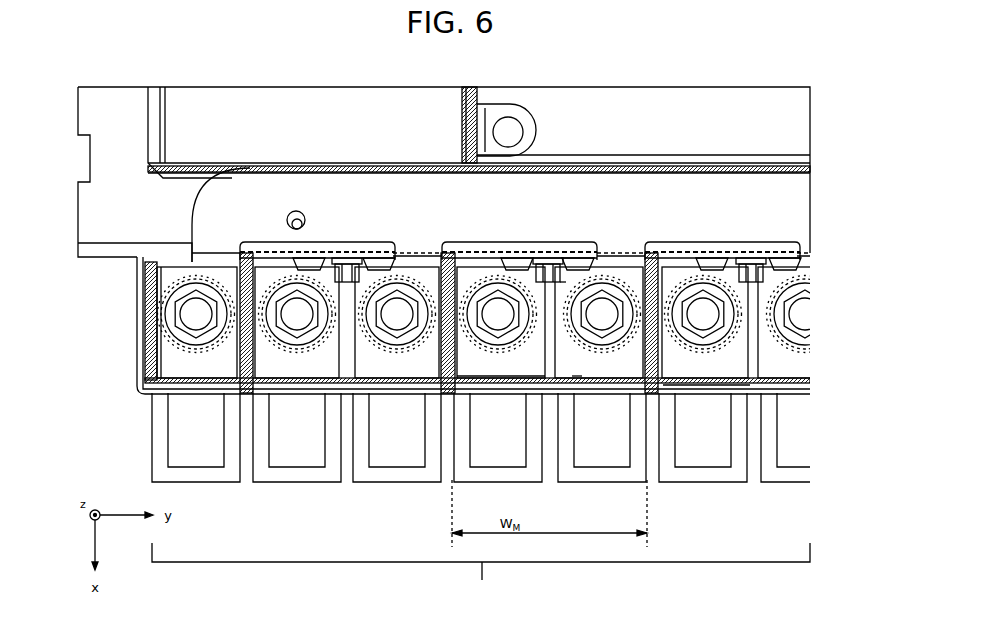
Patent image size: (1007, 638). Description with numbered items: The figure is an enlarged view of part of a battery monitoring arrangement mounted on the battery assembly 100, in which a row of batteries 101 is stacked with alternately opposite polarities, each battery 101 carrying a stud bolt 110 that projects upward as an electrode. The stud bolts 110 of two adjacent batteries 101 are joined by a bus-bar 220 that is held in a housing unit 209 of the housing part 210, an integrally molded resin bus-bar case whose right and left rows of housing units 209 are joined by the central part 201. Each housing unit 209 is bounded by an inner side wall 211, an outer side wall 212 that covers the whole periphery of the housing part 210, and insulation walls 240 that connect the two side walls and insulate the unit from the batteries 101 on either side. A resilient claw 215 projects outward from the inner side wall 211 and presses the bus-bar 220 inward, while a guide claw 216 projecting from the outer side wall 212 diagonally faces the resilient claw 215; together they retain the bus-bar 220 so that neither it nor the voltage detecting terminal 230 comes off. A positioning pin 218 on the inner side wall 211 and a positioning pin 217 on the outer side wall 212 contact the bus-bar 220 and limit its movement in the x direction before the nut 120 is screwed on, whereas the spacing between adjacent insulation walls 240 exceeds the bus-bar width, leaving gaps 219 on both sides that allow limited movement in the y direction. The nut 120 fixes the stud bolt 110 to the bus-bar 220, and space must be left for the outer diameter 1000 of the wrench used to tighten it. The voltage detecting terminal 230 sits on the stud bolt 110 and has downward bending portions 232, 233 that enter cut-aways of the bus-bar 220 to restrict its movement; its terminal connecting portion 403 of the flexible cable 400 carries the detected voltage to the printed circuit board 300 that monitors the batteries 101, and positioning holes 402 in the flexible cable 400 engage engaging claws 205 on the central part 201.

The battery assembly 100 is at (481, 574).
The battery 101 is at (202, 483).
The stud bolt 110 is at (396, 320).
The nut 120 is at (412, 330).
The central part 201 is at (115, 238).
The engaging claw 205 is at (318, 260).
The housing unit 209 is at (497, 252).
The housing part 210 is at (130, 352).
The inner side wall 211 is at (271, 257).
The outer side wall 212 is at (290, 389).
The resilient claw 215 is at (365, 260).
The guide claw 216 is at (618, 384).
The positioning pin 217 is at (710, 384).
The positioning pin 218 is at (350, 246).
The gap 219 is at (253, 393).
The bus-bar 220 is at (548, 384).
The voltage detecting terminal 230 is at (577, 378).
The bending portion 232 is at (641, 390).
The bending portion 233 is at (566, 280).
The insulation wall 240 is at (460, 264).
The printed circuit board 300 is at (562, 122).
The flexible cable 400 is at (698, 190).
The positioning hole 402 is at (296, 211).
The terminal connecting portion 403 is at (608, 253).
The outer diameter of the tool 1000 is at (183, 348).